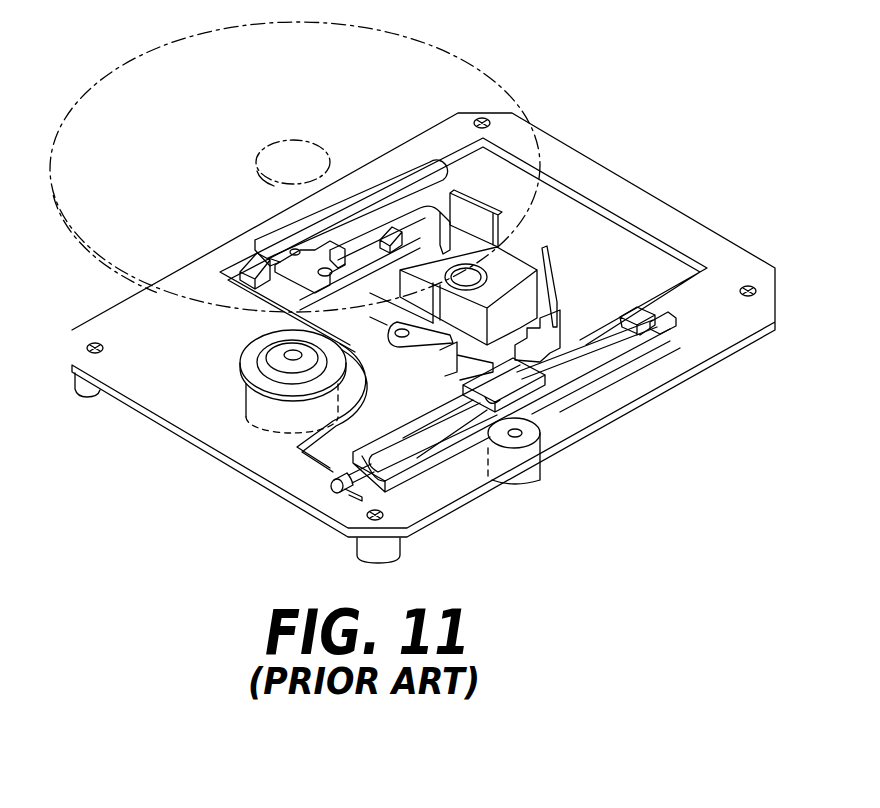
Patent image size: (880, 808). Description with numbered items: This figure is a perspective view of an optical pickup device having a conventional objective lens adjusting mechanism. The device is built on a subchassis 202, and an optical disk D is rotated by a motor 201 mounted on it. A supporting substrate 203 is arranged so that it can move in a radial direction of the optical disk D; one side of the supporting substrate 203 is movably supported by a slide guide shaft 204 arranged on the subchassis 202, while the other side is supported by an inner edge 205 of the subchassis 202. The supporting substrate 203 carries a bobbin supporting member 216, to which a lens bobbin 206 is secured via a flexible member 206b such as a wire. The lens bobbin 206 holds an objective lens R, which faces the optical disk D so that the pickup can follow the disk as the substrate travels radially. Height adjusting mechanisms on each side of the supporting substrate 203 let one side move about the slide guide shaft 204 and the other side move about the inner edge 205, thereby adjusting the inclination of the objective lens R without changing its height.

The optical disk D is at (168, 67).
The motor 201 is at (277, 420).
The subchassis 202 is at (615, 187).
The supporting substrate 203 is at (545, 300).
The slide guide shaft 204 is at (588, 350).
The inner edge 205 is at (417, 187).
The lens bobbin 206 is at (470, 312).
The flexible member 206b is at (468, 268).
The bobbin supporting member 216 is at (372, 220).
The objective lens R is at (478, 264).